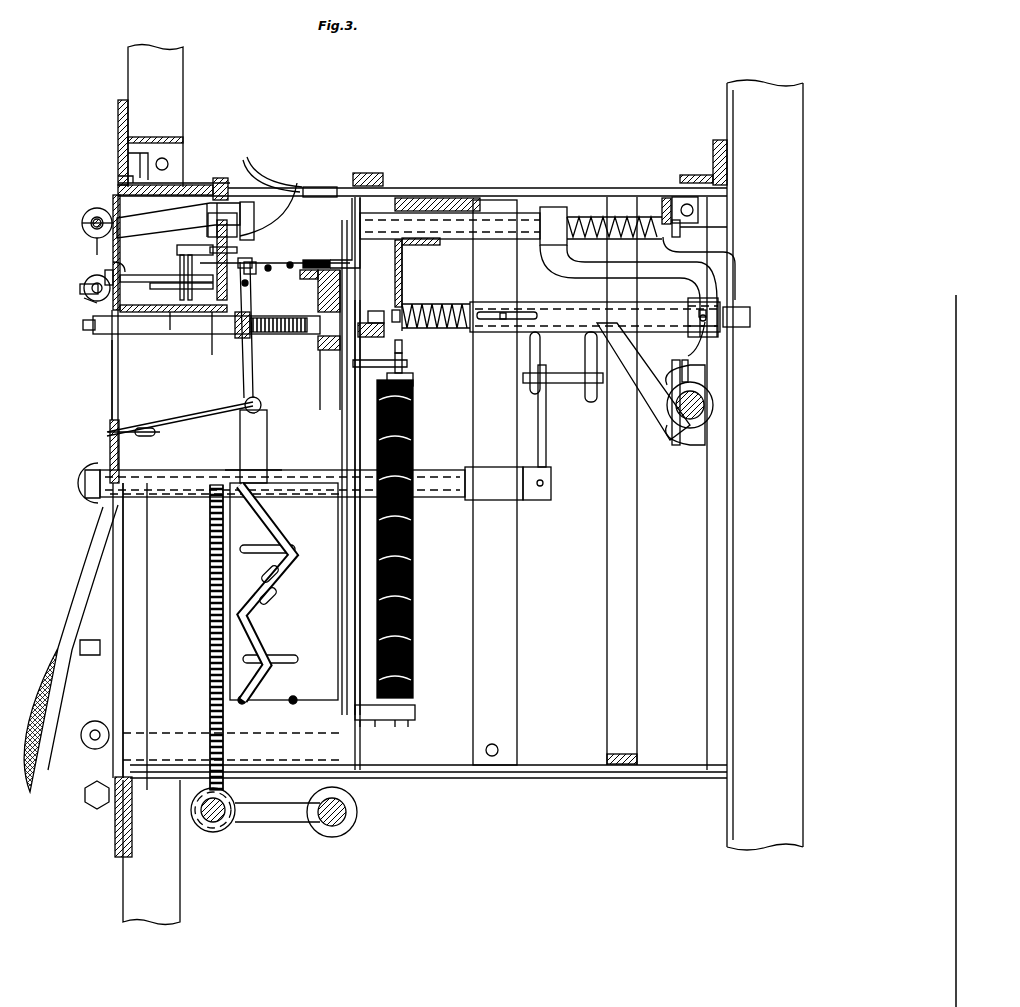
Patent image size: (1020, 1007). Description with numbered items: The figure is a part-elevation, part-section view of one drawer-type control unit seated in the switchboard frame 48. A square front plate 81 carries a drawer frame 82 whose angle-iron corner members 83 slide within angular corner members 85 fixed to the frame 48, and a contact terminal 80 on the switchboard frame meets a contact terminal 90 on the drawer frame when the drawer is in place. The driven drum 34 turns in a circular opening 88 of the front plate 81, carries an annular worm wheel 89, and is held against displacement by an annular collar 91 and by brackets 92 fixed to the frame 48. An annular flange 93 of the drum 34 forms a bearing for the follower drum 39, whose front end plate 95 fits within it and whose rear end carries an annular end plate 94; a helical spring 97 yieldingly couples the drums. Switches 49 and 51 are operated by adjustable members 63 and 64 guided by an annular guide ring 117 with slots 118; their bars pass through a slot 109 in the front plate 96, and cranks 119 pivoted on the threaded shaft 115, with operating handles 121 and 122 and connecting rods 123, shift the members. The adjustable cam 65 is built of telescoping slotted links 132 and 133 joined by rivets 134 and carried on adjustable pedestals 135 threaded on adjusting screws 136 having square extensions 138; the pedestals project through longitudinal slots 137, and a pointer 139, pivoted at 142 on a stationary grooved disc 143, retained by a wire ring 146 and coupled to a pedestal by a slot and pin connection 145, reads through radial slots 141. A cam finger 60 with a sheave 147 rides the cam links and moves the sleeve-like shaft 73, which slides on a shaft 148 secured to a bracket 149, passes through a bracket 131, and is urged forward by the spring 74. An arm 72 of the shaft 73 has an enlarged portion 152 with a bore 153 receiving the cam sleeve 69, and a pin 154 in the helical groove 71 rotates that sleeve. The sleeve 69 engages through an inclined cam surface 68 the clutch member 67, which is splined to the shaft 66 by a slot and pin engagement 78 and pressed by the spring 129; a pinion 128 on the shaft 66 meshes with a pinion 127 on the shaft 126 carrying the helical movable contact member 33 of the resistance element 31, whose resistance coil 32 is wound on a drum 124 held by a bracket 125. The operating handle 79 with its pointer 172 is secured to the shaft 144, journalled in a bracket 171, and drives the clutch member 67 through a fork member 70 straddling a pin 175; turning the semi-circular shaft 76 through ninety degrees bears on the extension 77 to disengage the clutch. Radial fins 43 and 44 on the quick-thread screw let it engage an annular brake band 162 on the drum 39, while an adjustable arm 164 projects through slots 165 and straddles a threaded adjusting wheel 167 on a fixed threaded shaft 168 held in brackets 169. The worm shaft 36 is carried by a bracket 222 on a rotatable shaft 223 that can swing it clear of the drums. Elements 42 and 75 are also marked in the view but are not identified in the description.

The switchboard frame structure 48 is at (176, 112).
The front plate 81 is at (118, 158).
The bracket 92 is at (147, 166).
The circular opening 88 is at (120, 181).
The driven drum 34 is at (206, 186).
The annular worm wheel 89 is at (219, 178).
The contact terminal 90 is at (318, 188).
The contact terminal 80 is at (352, 174).
The corner member 83 is at (511, 190).
The angular corner member 85 is at (551, 186).
The frame structure 82 is at (614, 798).
The bracket 171 is at (510, 561).
The shaft 73 is at (516, 239).
The spring 74 is at (566, 210).
The spring 75 is at (568, 213).
The bracket 149 is at (664, 200).
The shaft 148 is at (690, 230).
The arm 72 is at (556, 262).
The bore 153 is at (722, 298).
The shaft 66 is at (440, 310).
The clutch member 67 is at (510, 302).
The slot and pin engagement 78 is at (504, 321).
The inclined cam surface 68 is at (593, 306).
The cam sleeve 69 is at (683, 317).
The helical groove 71 is at (677, 313).
The enlarged portion 152 is at (706, 321).
The pin 154 is at (700, 346).
The semi-circular shaft 76 is at (706, 405).
The extension 77 is at (675, 440).
The pin 175 is at (584, 384).
The fork member 70 is at (540, 438).
The shaft 144 is at (446, 500).
The resistance element 31 is at (444, 407).
The resistance coil 32 is at (414, 457).
The drum 124 is at (410, 387).
The bracket 125 is at (386, 724).
The shaft 126 is at (352, 438).
The movable contact member 33 is at (342, 407).
The pinion 127 is at (372, 323).
The pinion 128 is at (381, 293).
The spring 129 is at (432, 326).
The bracket 131 is at (406, 290).
The cam finger 60 is at (334, 260).
The sheave 147 is at (310, 258).
The adjustable cam 65 is at (255, 630).
The annular brake band 162 is at (258, 279).
The adjustable pedestal 135 is at (247, 286).
The radial fin 44 is at (250, 226).
The adjustable arm 164 is at (160, 226).
The radial fin 43 is at (208, 232).
The switch 49 is at (214, 248).
The switch 51 is at (186, 262).
The post 42 is at (230, 256).
The adjustable member 63 is at (173, 276).
The adjustable member 64 is at (177, 277).
The annular guide ring 117 is at (160, 276).
The slot 118 is at (162, 286).
The slot 109 is at (113, 276).
The crank 119 is at (84, 284).
The operating handle 121 is at (80, 291).
The threaded shaft 115 is at (84, 299).
The operating handle 122 is at (92, 311).
The square extension 138 is at (86, 326).
The front end plate 95 is at (112, 333).
The annular flange 93 is at (140, 314).
The connecting rod 123 is at (174, 331).
The helical spring 97 is at (202, 331).
The adjusting screw 136 is at (213, 336).
The annular end plate 94 is at (320, 340).
The slot and pin connection 145 is at (252, 344).
The wire ring 146 is at (261, 404).
The pivot 142 is at (246, 401).
The stationary grooved disc 143 is at (240, 438).
The radial slot 141 is at (112, 376).
The pointer 139 is at (108, 432).
The slot 165 is at (100, 207).
The fixed threaded shaft 168 is at (90, 222).
The threaded adjusting wheel 167 is at (86, 228).
The bracket 169 is at (92, 236).
The front plate 96 is at (113, 258).
The annular collar 91 is at (144, 190).
The operating handle 79 is at (46, 690).
The pointer 172 is at (100, 805).
The worm shaft 36 is at (224, 826).
The bracket 222 is at (358, 816).
The rotatable shaft 223 is at (338, 830).
The follower drum 39 is at (318, 528).
The longitudinal slot 137 is at (248, 548).
The slotted link 132 is at (284, 582).
The slotted link 133 is at (262, 604).
The rivet 134 is at (266, 580).